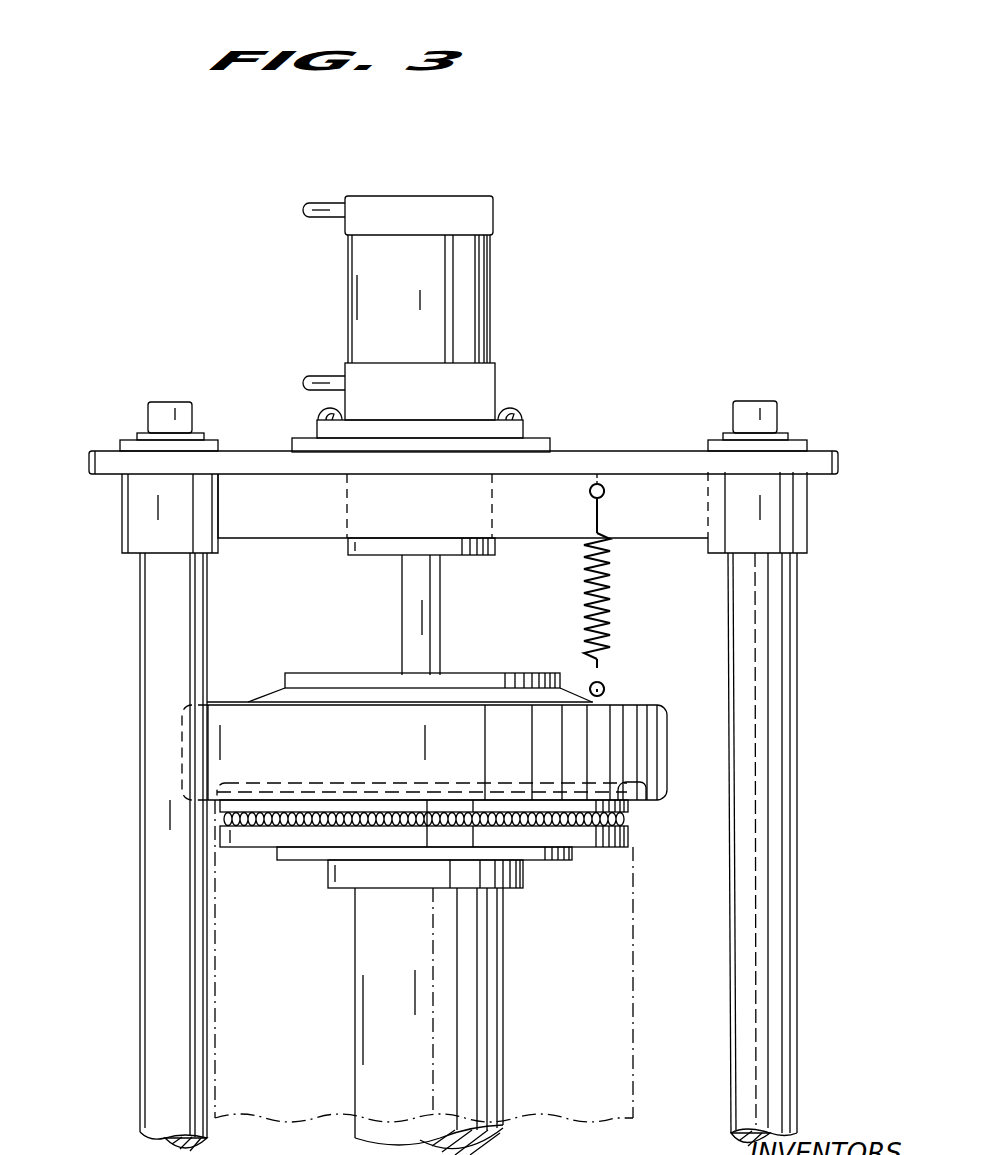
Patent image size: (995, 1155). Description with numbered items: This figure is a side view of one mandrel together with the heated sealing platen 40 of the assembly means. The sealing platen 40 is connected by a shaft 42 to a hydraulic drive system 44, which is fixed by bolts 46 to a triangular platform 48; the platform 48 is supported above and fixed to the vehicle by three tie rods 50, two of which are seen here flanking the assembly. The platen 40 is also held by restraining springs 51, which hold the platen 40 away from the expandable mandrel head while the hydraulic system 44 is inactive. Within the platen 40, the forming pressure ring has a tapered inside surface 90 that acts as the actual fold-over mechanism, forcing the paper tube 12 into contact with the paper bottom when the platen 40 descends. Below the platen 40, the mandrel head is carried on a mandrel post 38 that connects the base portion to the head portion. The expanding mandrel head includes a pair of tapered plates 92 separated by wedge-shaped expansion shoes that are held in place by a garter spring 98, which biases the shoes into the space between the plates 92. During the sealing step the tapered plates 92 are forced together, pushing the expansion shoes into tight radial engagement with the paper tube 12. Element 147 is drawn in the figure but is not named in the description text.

The paper tube 12 is at (636, 962).
The mandrel post 38 is at (487, 1005).
The heated sealing platen 40 is at (237, 730).
The shaft 42 is at (432, 598).
The hydraulic drive system 44 is at (478, 266).
The bolts 46 is at (325, 413).
The triangular platform 48 is at (572, 470).
The tie rods 50 is at (152, 920).
The restraining springs 51 is at (612, 592).
The tapered inside surface 90 is at (640, 790).
The tapered plates 92 is at (633, 840).
The garter spring 98 is at (222, 820).
The seal ring 147 is at (342, 795).